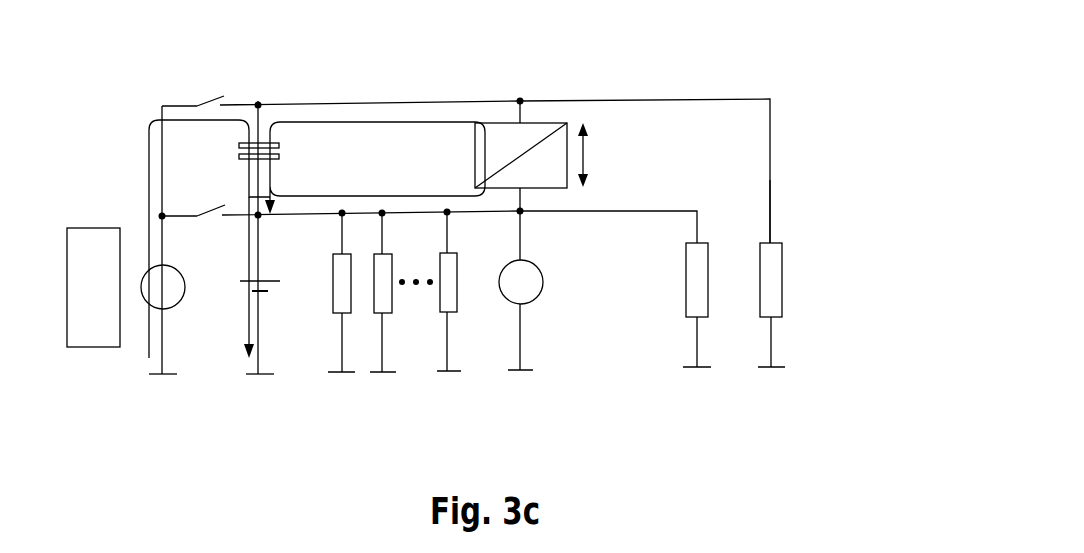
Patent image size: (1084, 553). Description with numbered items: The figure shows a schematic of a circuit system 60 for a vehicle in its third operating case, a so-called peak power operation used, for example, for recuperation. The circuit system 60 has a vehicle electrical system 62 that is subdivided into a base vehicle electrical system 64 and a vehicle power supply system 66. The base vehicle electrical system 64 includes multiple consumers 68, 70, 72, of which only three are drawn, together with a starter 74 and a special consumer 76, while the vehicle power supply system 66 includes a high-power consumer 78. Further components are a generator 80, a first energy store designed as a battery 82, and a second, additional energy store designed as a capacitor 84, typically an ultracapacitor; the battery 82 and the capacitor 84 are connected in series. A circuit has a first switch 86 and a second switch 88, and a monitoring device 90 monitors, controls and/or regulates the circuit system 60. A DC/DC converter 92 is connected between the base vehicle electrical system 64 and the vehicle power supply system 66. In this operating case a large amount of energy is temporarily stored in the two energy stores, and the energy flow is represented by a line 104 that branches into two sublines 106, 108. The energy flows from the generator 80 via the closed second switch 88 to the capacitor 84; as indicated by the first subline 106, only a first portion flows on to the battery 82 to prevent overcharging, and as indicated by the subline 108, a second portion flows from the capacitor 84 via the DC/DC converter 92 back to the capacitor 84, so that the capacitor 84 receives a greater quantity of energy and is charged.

The circuit system 60 is at (255, 413).
The vehicle electrical system 62 is at (727, 50).
The base vehicle electrical system 64 is at (610, 405).
The vehicle power supply system 66 is at (773, 195).
The consumer 68 is at (318, 348).
The consumer 70 is at (405, 343).
The consumer 72 is at (470, 342).
The starter 74 is at (548, 340).
The special consumer 76 is at (680, 330).
The high-power consumer 78 is at (752, 328).
The generator 80 is at (183, 345).
The battery 82 is at (277, 332).
The capacitor 84 is at (312, 148).
The first switch 86 is at (208, 203).
The second switch 88 is at (232, 90).
The monitoring device 90 is at (92, 350).
The DC/DC converter 92 is at (613, 146).
The line 104 is at (172, 231).
The first subline 106 is at (243, 322).
The subline 108 is at (403, 115).